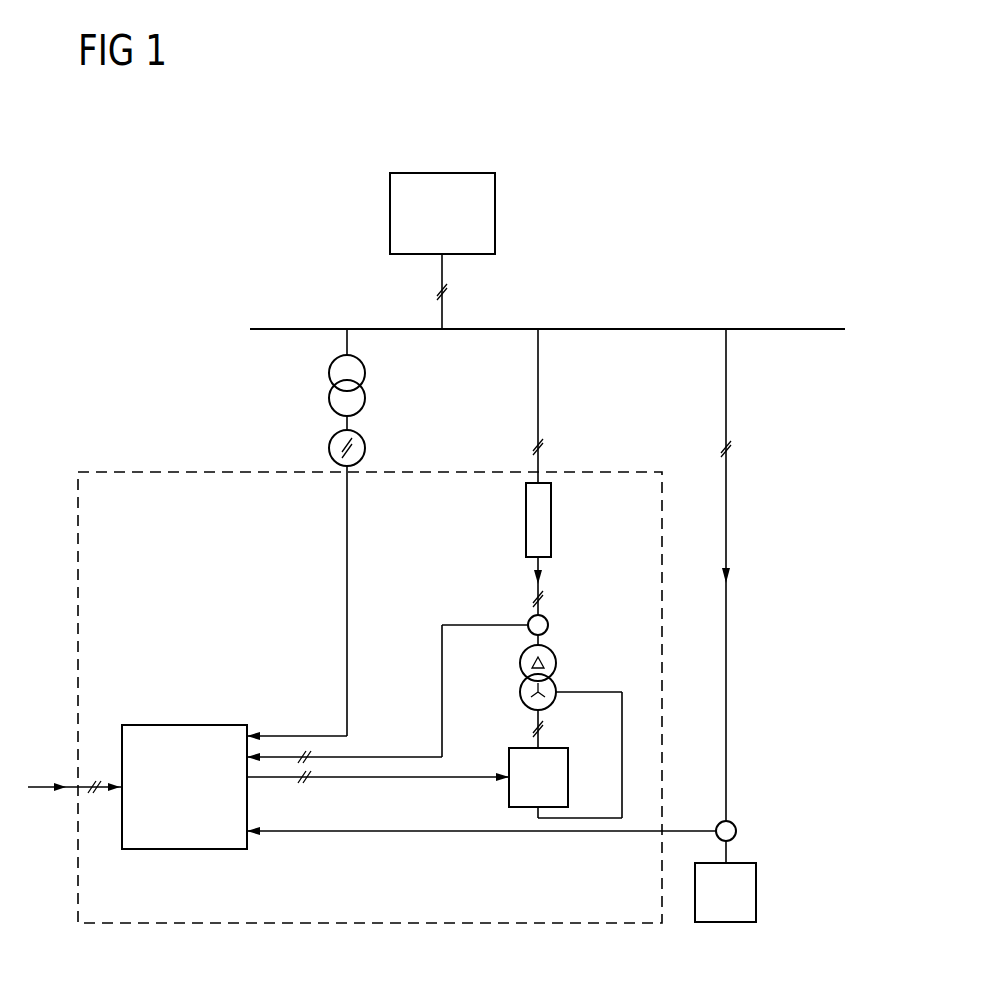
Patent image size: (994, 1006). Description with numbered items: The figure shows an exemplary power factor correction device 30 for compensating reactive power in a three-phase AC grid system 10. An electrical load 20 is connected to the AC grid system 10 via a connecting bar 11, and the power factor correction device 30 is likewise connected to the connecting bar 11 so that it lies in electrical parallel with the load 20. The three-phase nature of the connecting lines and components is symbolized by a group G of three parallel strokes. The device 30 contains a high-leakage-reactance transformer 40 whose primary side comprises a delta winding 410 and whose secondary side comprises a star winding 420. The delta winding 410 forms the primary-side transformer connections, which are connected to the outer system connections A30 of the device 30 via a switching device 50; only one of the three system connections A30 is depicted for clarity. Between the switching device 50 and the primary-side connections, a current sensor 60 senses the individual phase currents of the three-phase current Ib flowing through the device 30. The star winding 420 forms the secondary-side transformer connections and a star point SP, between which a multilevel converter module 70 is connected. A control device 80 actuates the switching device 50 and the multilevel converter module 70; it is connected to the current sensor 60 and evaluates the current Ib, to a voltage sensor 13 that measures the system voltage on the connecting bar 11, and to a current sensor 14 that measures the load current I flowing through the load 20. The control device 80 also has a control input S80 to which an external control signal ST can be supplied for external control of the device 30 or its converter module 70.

The three-phase AC grid system 10 is at (495, 214).
The connecting bar 11 is at (780, 328).
The voltage sensor 13 is at (365, 373).
The group of three parallel strokes G is at (375, 447).
The outer system connections A30 is at (538, 472).
The switching device 50 is at (552, 518).
The three-phase current Ib is at (549, 586).
The current sensor 60 is at (548, 625).
The high-leakage-reactance transformer 40 is at (537, 677).
The delta winding 410 is at (520, 663).
The star winding 420 is at (520, 693).
The star point SP is at (622, 692).
The multilevel converter module 70 is at (569, 777).
The control device 80 is at (247, 808).
The control input S80 is at (122, 787).
The external control signal ST is at (75, 773).
The load current I is at (732, 575).
The current sensor 14 is at (736, 831).
The electrical load 20 is at (757, 890).
The power factor correction device 30 is at (372, 924).